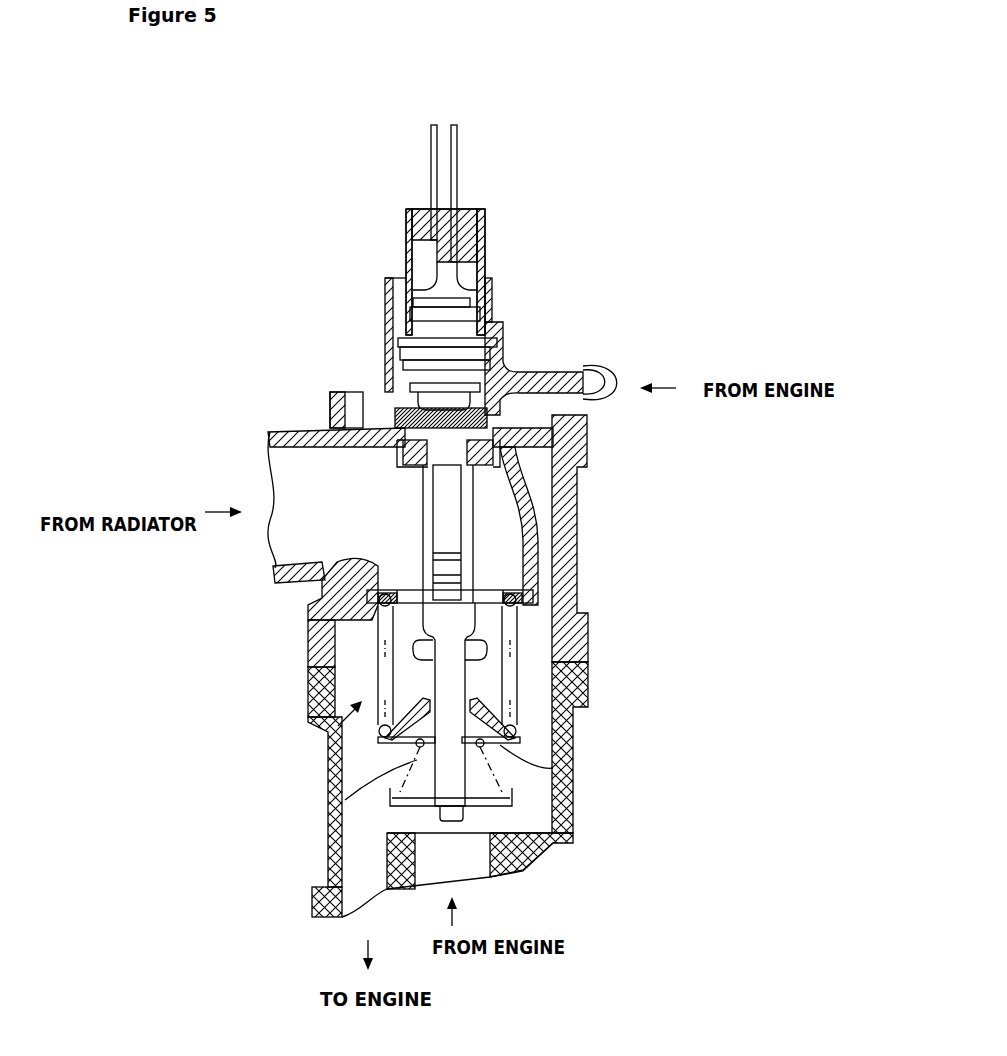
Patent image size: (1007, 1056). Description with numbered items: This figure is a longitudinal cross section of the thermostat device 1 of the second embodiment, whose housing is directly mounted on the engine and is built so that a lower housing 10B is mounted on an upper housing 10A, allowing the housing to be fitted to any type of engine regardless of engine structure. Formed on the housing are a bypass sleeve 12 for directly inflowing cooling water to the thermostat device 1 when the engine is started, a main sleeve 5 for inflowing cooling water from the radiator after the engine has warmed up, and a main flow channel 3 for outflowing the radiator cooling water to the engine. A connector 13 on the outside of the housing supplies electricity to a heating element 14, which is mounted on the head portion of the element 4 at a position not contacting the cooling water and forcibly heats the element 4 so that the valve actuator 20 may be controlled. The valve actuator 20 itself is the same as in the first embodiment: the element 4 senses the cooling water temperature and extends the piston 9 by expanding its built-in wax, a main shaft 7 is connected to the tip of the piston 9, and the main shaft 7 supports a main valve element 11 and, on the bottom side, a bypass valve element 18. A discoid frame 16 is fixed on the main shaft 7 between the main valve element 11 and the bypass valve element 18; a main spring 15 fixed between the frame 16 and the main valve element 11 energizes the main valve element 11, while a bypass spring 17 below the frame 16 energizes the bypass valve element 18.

The thermostat device 1 is at (644, 264).
The main flow channel 3 is at (330, 575).
The element 4 is at (385, 416).
The main sleeve 5 is at (265, 432).
The main shaft 7 is at (457, 681).
The piston 9 is at (450, 516).
The upper housing 10A is at (577, 545).
The lower housing 10B is at (573, 755).
The main valve element 11 is at (573, 582).
The bypass sleeve 12 is at (530, 362).
The connector 13 is at (470, 212).
The heating element 14 is at (480, 268).
The main spring 15 is at (308, 635).
The discoid frame 16 is at (548, 782).
The bypass spring 17 is at (400, 765).
The bypass valve element 18 is at (553, 843).
The valve actuator 20 is at (328, 725).